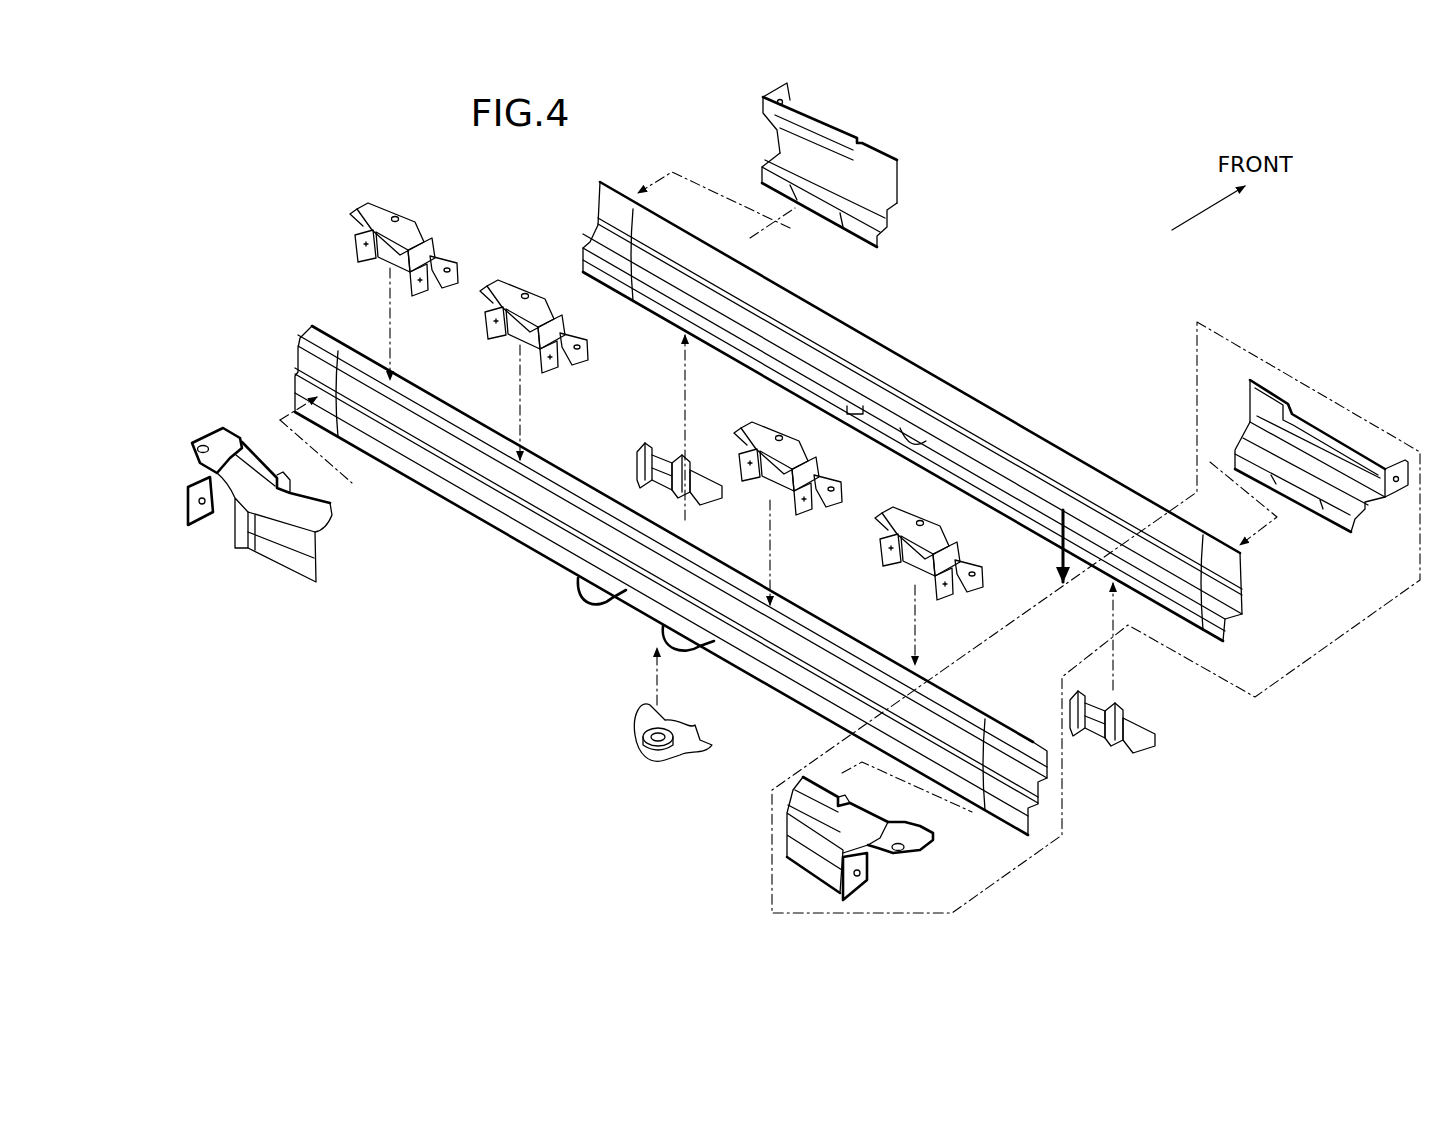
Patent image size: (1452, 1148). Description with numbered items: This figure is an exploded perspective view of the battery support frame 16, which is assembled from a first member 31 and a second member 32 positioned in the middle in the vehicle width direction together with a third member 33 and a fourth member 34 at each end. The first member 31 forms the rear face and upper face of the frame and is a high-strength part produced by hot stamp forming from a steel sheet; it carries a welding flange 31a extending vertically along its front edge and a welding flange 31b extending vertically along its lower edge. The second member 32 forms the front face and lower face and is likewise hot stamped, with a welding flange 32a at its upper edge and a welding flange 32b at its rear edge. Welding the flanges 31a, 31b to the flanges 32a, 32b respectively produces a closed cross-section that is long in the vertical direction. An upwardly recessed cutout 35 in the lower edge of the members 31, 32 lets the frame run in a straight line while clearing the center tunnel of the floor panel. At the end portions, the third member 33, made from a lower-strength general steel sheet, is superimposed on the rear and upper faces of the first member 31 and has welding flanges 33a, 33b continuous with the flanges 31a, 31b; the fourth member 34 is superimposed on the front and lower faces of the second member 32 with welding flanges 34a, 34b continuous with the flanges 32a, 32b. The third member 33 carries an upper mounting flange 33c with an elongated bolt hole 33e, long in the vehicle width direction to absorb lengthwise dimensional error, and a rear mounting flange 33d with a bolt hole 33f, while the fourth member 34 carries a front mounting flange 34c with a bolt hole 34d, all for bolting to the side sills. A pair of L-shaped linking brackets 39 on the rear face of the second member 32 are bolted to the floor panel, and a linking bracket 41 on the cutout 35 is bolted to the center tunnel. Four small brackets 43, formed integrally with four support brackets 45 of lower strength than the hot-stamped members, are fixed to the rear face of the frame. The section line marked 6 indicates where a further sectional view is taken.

The section line 6 is at (1062, 529).
The battery support frame 16 is at (565, 668).
The first member 31 is at (800, 592).
The welding flange 31a is at (445, 412).
The welding flange 31b is at (463, 500).
The second member 32 is at (875, 336).
The welding flange 32a is at (1015, 428).
The welding flange 32b is at (1020, 530).
The third member 33 is at (262, 566).
The welding flange 33a is at (300, 484).
The welding flange 33b is at (300, 578).
The upper mounting flange 33c is at (225, 432).
The rear mounting flange 33d is at (195, 525).
The bolt hole 33e is at (205, 446).
The bolt hole 33f is at (201, 500).
The fourth member 34 is at (915, 172).
The welding flange 34a is at (840, 138).
The welding flange 34b is at (800, 205).
The front mounting flange 34c is at (763, 99).
The bolt hole 34d is at (794, 102).
The cutout 35 is at (586, 560).
The linking bracket 39 is at (660, 456).
The linking bracket 41 is at (640, 740).
The small bracket 43 is at (440, 262).
The support bracket 45 is at (397, 212).